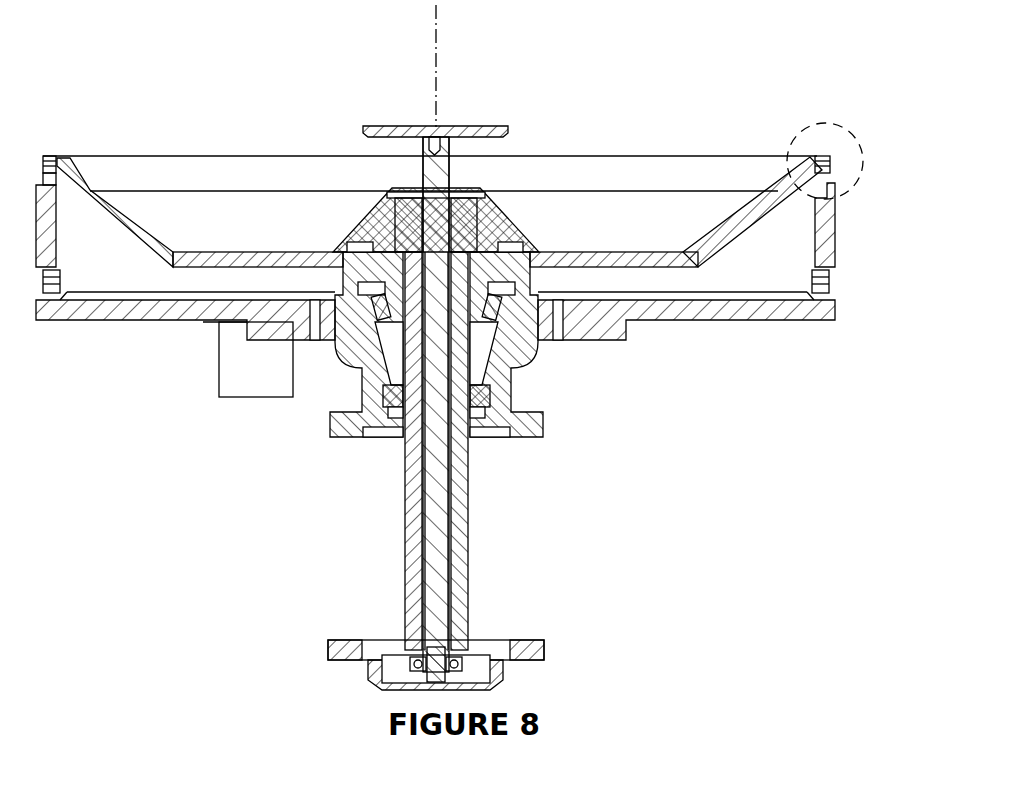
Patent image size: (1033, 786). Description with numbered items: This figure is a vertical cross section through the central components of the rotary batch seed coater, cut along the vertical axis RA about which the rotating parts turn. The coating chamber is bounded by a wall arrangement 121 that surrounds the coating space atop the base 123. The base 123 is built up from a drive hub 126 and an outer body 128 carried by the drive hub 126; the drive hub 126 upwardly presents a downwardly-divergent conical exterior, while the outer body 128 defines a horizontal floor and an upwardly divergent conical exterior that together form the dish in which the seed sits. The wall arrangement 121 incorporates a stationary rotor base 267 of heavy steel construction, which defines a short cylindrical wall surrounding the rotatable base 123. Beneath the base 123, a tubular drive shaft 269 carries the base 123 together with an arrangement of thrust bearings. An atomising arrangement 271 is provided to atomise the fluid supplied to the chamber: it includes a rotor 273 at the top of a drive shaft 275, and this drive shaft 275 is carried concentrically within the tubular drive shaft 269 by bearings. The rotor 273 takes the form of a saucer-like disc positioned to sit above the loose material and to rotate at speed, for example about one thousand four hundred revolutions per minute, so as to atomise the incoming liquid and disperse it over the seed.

The wall arrangement 121 is at (870, 192).
The base 123 is at (630, 145).
The drive hub 126 is at (485, 222).
The outer body 128 is at (683, 260).
The stationary rotor base 267 is at (830, 242).
The tubular drive shaft 269 is at (463, 582).
The atomising arrangement 271 is at (332, 100).
The rotor 273 is at (388, 128).
The drive shaft 275 is at (430, 533).
The rotation axis RA is at (437, 67).